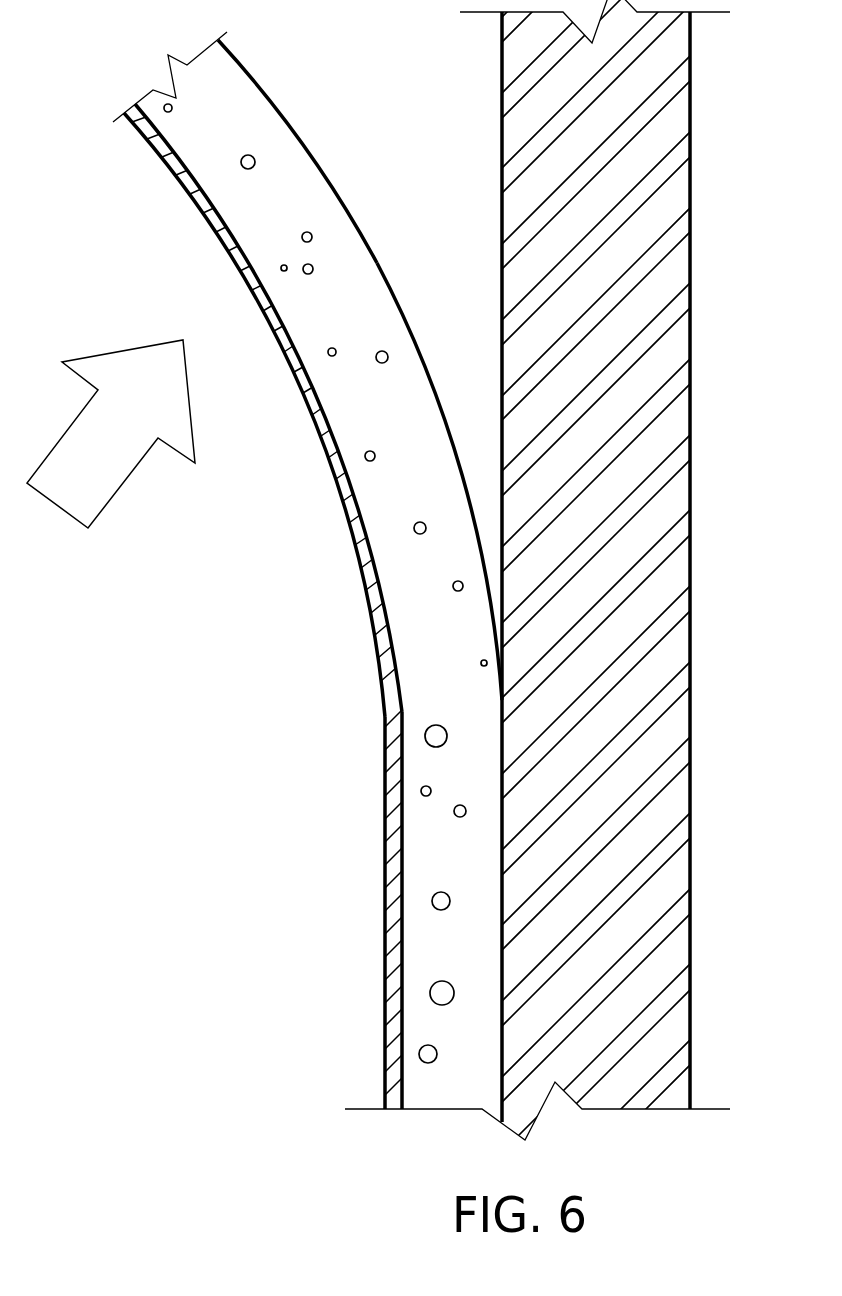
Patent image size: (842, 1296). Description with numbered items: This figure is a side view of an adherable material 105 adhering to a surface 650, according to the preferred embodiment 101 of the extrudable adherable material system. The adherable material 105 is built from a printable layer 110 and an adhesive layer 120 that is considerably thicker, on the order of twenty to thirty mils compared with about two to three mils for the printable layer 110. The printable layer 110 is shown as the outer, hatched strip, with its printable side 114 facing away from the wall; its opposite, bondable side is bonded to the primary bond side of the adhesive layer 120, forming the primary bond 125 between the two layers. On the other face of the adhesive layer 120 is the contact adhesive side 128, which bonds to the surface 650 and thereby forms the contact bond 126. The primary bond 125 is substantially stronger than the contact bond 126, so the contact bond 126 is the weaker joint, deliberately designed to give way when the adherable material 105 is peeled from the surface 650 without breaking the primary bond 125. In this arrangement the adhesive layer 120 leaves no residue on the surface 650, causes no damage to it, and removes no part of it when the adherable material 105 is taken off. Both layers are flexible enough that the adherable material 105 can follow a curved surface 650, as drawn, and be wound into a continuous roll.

The embodiment 101 is at (186, 670).
The adherable material 105 is at (335, 951).
The printable layer 110 is at (338, 473).
The printable side 114 is at (353, 557).
The adhesive layer 120 is at (287, 141).
The primary bond 125 is at (402, 1110).
The contact bond 126 is at (502, 1122).
The contact adhesive side 128 is at (378, 265).
The surface 650 is at (502, 92).